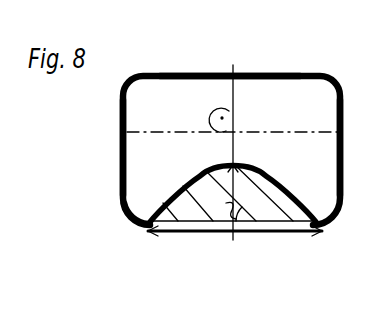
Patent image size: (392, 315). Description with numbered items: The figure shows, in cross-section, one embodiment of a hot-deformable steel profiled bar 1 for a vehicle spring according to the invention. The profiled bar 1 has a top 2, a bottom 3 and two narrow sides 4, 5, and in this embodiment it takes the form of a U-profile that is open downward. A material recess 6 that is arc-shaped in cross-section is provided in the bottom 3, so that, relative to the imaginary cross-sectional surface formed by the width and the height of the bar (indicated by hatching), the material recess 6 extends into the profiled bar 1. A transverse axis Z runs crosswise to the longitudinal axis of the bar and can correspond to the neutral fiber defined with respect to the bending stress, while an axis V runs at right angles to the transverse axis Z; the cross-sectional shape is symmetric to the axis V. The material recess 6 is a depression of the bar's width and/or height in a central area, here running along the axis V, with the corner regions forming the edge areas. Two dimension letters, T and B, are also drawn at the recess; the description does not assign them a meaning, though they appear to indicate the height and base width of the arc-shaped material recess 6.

The profiled bar 1 is at (312, 10).
The top 2 is at (153, 72).
The bottom 3 is at (321, 231).
The narrow side 4 is at (344, 102).
The narrow side 5 is at (118, 110).
The material recess 6 is at (157, 240).
The transverse axis Z is at (146, 131).
The axis V is at (234, 90).
The hump height T is at (220, 184).
The hump base width B is at (235, 245).